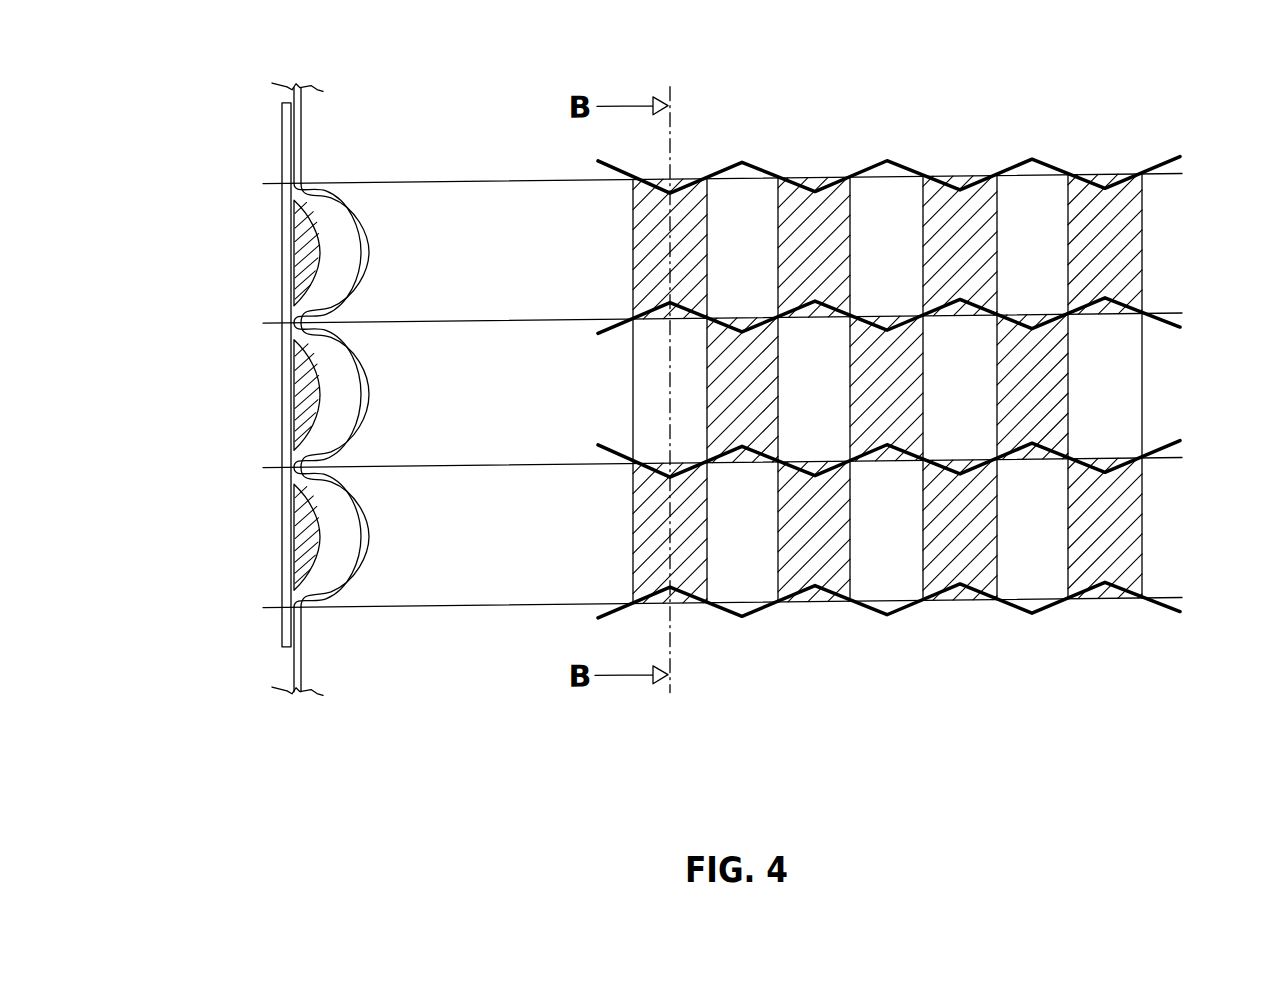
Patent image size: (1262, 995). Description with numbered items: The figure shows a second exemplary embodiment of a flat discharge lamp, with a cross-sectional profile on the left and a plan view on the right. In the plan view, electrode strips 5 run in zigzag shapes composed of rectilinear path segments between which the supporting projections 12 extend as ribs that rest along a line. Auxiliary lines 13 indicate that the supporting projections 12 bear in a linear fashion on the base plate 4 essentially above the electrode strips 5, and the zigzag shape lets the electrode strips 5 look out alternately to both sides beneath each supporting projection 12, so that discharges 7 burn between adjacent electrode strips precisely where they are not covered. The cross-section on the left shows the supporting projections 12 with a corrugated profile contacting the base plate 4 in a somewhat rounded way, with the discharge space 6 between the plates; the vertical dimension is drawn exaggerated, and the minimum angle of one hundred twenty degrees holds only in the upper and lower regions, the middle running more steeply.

The base plate 4 is at (281, 254).
The electrode strips 5 is at (1165, 175).
The discharge space 6 is at (313, 401).
The discharge regions 7 is at (313, 542).
The supporting projections 12 is at (387, 326).
The auxiliary lines 13 is at (511, 186).